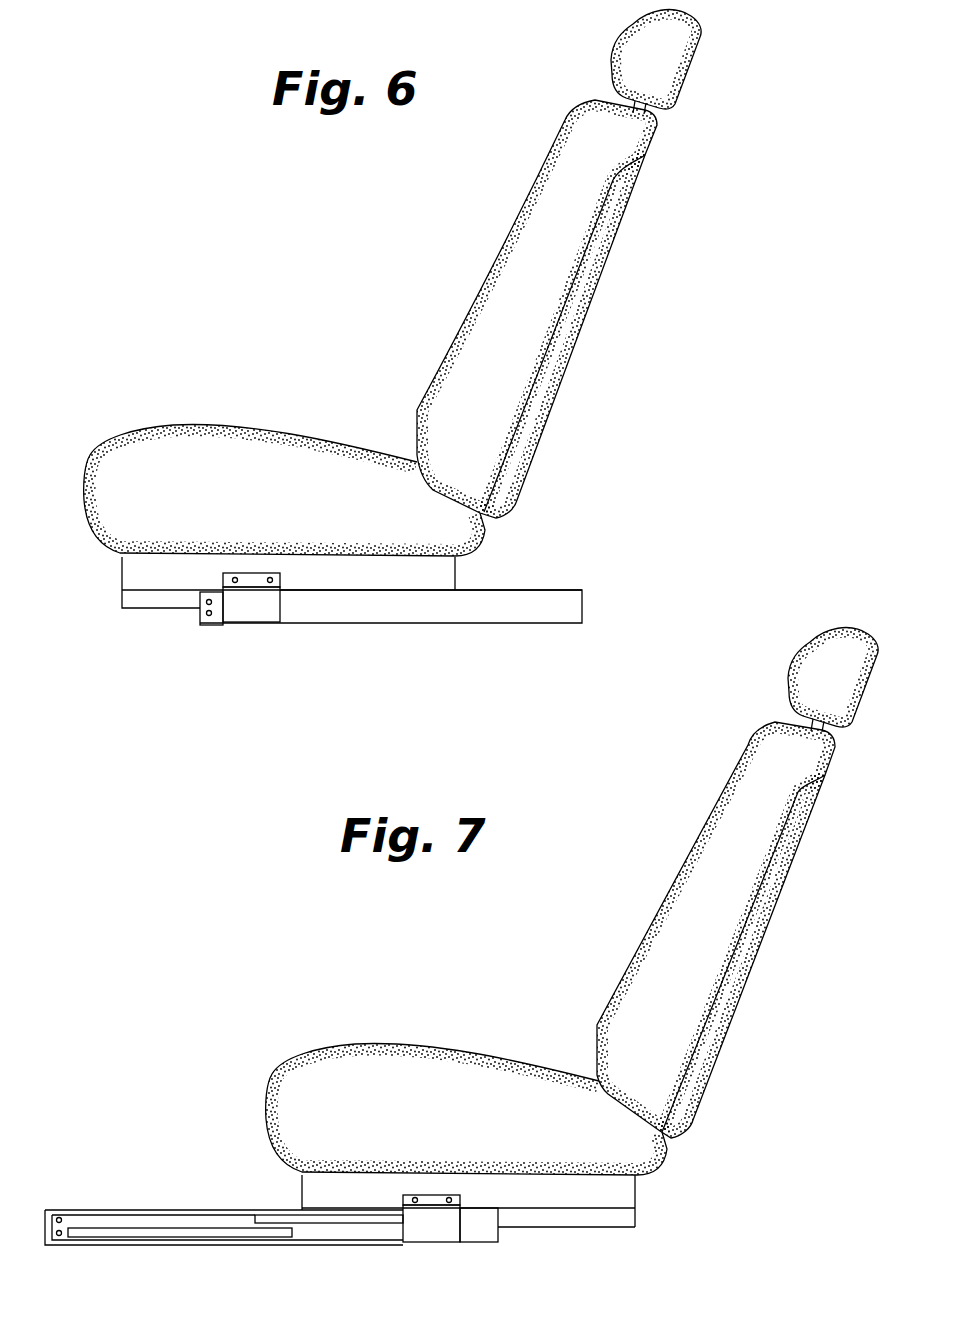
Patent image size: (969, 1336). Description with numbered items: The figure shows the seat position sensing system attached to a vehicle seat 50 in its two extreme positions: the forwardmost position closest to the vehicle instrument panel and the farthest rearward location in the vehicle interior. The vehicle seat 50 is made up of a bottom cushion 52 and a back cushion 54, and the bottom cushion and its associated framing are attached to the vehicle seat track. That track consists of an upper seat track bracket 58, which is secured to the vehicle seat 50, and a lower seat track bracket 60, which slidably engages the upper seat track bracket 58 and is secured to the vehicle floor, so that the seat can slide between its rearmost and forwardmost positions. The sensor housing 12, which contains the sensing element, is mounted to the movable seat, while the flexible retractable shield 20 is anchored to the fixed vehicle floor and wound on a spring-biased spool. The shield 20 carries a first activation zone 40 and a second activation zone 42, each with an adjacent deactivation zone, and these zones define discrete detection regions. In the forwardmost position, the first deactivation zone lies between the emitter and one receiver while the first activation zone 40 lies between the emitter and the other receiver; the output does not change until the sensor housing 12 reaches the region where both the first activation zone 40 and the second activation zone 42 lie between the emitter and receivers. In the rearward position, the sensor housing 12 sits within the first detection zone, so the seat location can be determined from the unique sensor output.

In FIG. 6, the vehicle seat 50 is at (392, 283).
In FIG. 7, the vehicle seat 50 is at (573, 901).
In FIG. 6, the bottom cushion 52 is at (180, 440).
In FIG. 7, the bottom cushion 52 is at (358, 1058).
In FIG. 6, the back cushion 54 is at (497, 295).
In FIG. 7, the back cushion 54 is at (672, 903).
In FIG. 6, the upper seat track bracket 58 is at (450, 575).
In FIG. 7, the upper seat track bracket 58 is at (628, 1193).
In FIG. 6, the lower seat track bracket 60 is at (562, 623).
In FIG. 7, the lower seat track bracket 60 is at (190, 1245).
In FIG. 6, the second activation zone 42 is at (340, 617).
In FIG. 7, the second activation zone 42 is at (260, 1220).
In FIG. 7, the first activation zone 40 is at (108, 1233).
In FIG. 6, the sensor housing 12 is at (252, 610).
In FIG. 7, the sensor housing 12 is at (437, 1242).
In FIG. 6, the shield 20 is at (215, 620).
In FIG. 7, the shield 20 is at (148, 1222).